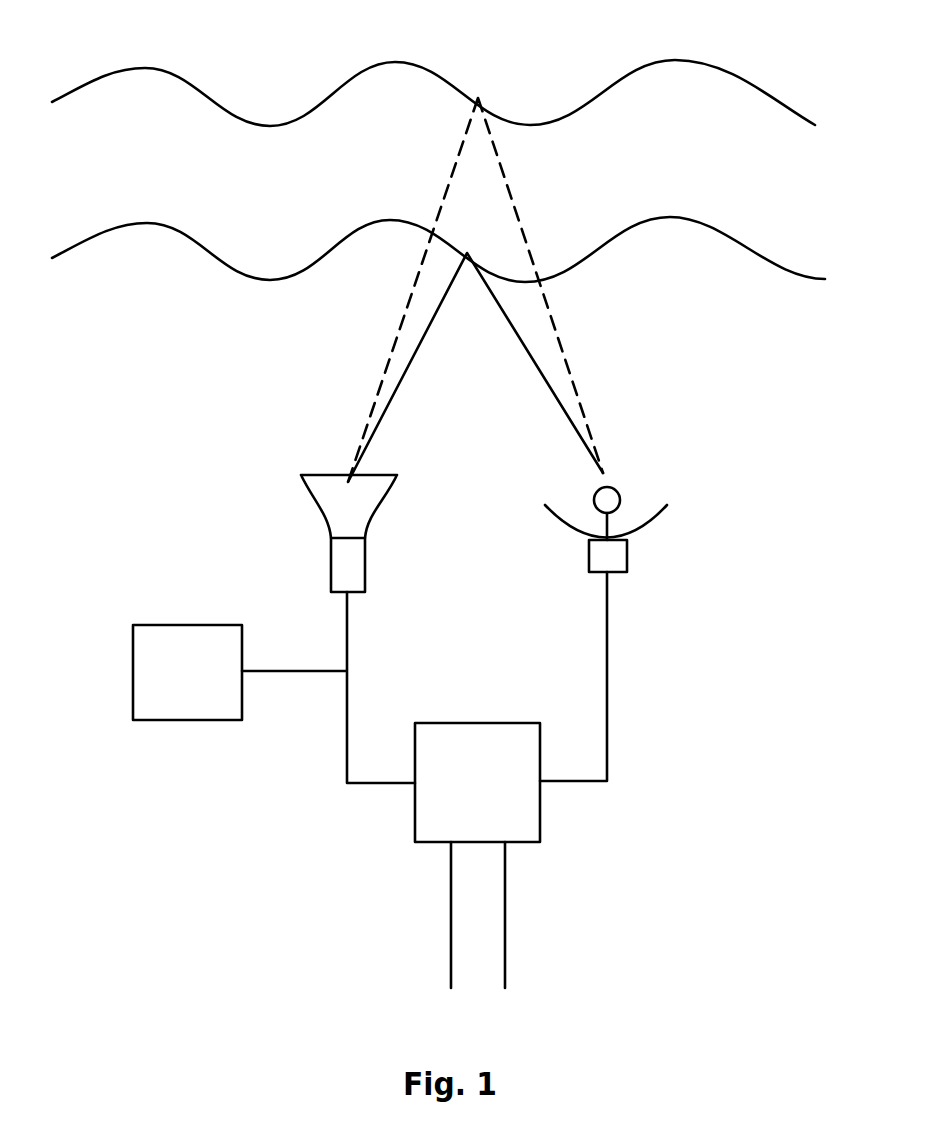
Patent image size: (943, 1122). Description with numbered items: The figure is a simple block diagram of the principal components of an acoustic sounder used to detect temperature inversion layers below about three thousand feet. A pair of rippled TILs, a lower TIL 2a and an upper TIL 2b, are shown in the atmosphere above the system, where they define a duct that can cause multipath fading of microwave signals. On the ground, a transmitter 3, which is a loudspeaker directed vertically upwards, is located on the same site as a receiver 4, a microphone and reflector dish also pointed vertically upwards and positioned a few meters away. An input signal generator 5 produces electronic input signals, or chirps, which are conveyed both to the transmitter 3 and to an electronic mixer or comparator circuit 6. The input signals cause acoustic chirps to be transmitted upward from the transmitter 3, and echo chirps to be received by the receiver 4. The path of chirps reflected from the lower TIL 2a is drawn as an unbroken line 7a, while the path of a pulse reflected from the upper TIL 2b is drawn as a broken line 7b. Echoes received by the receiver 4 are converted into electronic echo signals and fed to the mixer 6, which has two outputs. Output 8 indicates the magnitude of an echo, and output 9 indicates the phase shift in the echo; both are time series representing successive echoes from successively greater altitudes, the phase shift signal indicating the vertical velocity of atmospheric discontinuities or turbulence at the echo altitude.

The lower TIL 2a is at (205, 243).
The upper TIL 2b is at (205, 87).
The transmitter 3 is at (318, 536).
The receiver 4 is at (672, 542).
The input signal generator 5 is at (187, 672).
The electronic mixer or comparator circuit 6 is at (477, 738).
The unbroken line 7a is at (415, 358).
The broken line 7b is at (403, 322).
The output 8 is at (445, 920).
The output 9 is at (510, 928).